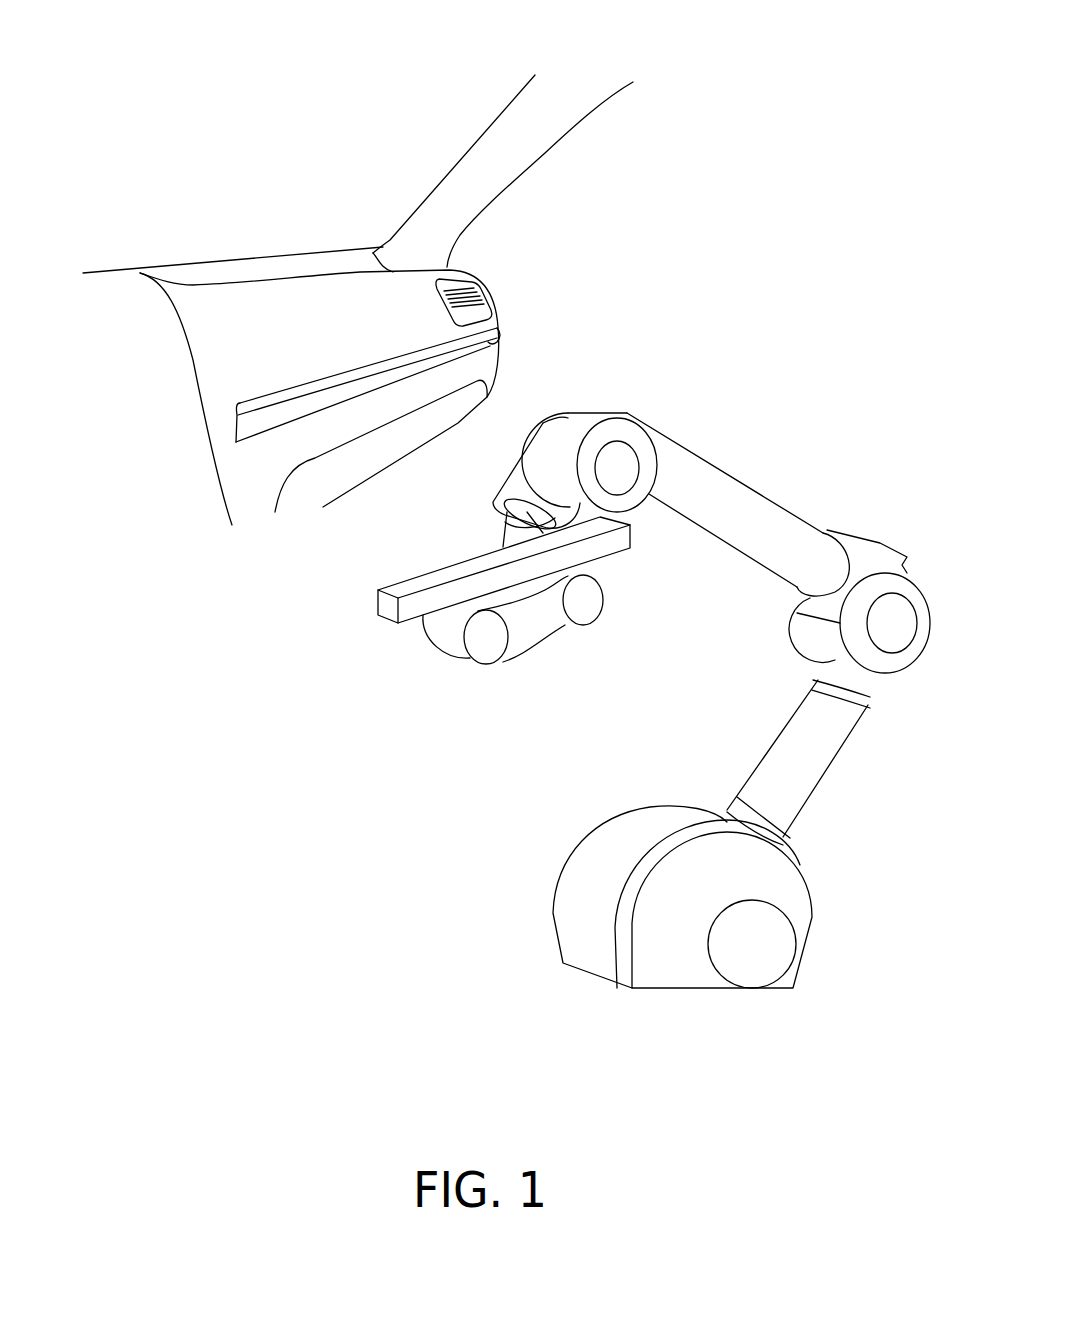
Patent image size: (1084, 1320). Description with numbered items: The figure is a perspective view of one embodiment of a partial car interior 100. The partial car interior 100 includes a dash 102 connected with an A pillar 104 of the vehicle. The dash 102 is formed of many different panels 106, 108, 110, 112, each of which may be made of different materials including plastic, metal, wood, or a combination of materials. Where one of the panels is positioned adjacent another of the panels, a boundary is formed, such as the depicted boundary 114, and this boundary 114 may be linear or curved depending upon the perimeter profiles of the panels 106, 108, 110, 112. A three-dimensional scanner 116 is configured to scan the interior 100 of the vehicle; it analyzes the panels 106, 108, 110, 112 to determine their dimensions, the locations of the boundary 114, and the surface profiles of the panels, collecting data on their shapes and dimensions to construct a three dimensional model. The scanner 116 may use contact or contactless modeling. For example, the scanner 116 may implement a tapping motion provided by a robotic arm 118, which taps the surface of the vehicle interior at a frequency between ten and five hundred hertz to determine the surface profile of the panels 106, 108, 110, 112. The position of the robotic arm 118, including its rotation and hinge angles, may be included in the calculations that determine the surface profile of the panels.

The partial car interior 100 is at (202, 112).
The dash 102 is at (162, 412).
The A pillar 104 is at (481, 171).
The panel 106 is at (300, 321).
The panel 108 is at (497, 340).
The panel 110 is at (322, 448).
The panel 112 is at (374, 459).
The boundary 114 is at (393, 358).
The 3d scanner 116 is at (540, 637).
The robotic arm 118 is at (745, 493).